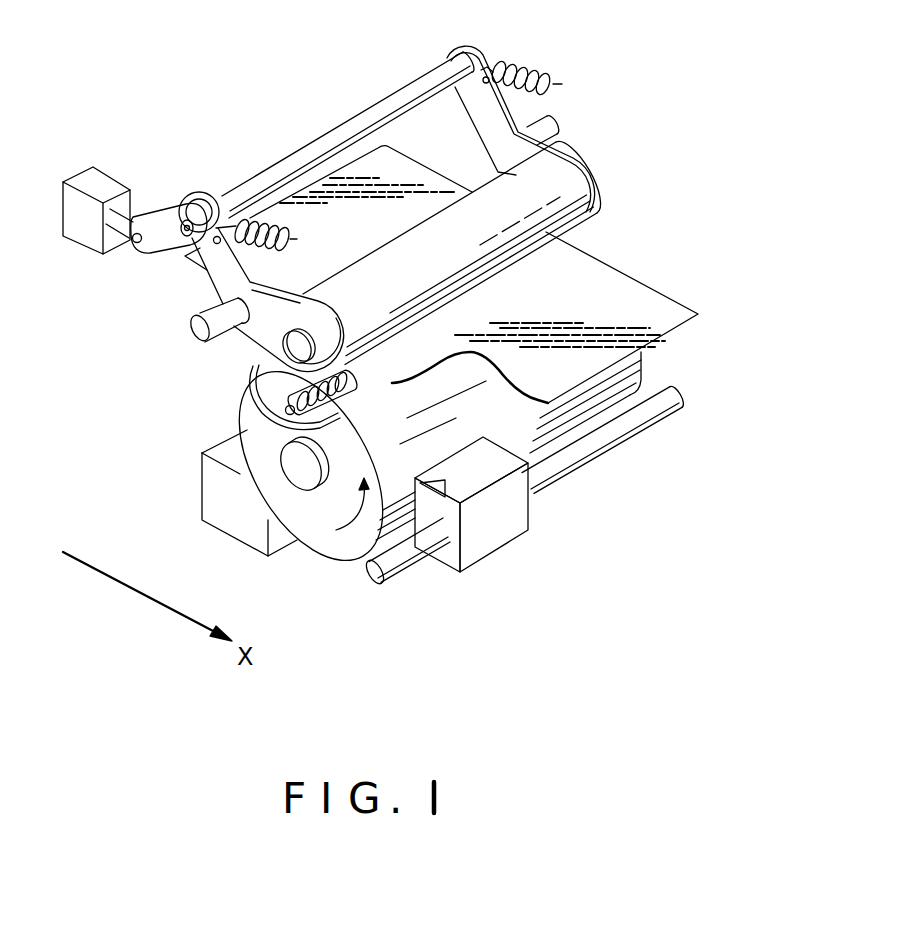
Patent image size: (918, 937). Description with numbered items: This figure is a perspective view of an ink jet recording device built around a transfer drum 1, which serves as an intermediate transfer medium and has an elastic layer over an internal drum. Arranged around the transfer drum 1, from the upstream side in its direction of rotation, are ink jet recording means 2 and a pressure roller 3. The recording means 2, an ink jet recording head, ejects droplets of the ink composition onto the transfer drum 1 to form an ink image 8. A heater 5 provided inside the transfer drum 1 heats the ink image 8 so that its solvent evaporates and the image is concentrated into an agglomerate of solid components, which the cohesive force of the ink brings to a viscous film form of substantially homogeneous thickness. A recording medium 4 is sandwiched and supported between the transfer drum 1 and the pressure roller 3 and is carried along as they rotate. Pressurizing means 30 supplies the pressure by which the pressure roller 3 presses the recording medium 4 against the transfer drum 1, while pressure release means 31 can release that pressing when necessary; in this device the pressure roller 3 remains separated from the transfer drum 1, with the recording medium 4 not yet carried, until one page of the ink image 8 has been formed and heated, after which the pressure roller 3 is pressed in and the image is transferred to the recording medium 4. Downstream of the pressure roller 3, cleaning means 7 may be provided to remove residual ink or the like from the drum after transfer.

The transfer drum 1 is at (327, 557).
The ink jet recording means 2 is at (503, 538).
The pressure roller 3 is at (589, 221).
The recording medium 4 is at (637, 298).
The heater 5 is at (300, 393).
The cleaning means 7 is at (212, 495).
The ink image 8 is at (422, 390).
The pressurizing means 30 is at (552, 13).
The pressure release means 31 is at (174, 186).